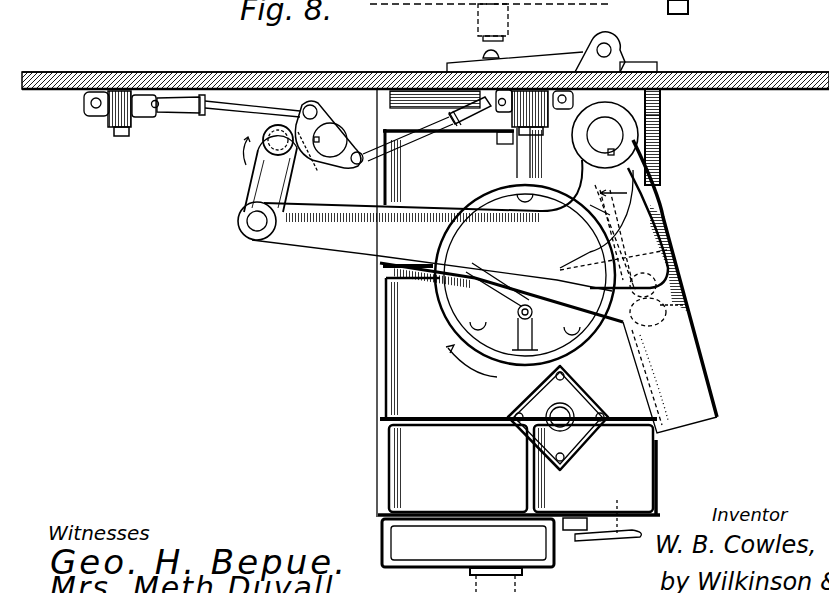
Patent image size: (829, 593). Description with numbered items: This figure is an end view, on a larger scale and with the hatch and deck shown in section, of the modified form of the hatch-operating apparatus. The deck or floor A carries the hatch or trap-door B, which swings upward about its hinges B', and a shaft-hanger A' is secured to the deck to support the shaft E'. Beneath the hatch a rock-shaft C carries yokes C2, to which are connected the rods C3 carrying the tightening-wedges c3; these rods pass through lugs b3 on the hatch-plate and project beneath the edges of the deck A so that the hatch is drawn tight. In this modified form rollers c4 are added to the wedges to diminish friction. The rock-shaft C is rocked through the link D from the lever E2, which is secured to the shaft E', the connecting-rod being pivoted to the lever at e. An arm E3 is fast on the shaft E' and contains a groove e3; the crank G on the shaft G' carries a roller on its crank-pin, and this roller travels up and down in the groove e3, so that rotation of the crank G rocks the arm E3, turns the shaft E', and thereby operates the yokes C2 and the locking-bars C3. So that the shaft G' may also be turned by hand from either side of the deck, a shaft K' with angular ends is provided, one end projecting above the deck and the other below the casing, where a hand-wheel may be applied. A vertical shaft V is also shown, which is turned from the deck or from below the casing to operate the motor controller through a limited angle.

The deck A is at (425, 62).
The shaft-hanger A' is at (668, 137).
The hatch B is at (425, 57).
The hinges B' is at (552, 42).
The rock-shaft C is at (327, 150).
The yokes C2 is at (318, 114).
The rods C3 is at (234, 103).
The tightening-wedges c3 is at (88, 112).
The rollers c4 is at (101, 92).
The lugs b3 is at (136, 125).
The link D is at (247, 178).
The pivot e is at (252, 226).
The shaft E' is at (636, 135).
The lever E2 is at (460, 241).
The arm E3 is at (693, 333).
The groove e3 is at (695, 400).
The crank G is at (525, 281).
The shaft G' is at (466, 274).
The shaft K' is at (491, 298).
The vertical shaft V is at (616, 508).